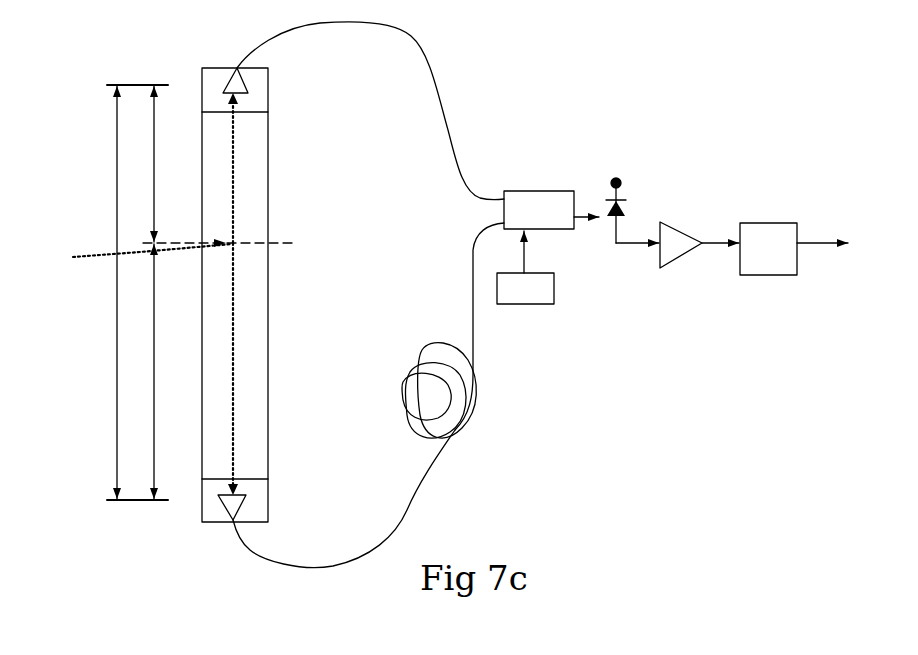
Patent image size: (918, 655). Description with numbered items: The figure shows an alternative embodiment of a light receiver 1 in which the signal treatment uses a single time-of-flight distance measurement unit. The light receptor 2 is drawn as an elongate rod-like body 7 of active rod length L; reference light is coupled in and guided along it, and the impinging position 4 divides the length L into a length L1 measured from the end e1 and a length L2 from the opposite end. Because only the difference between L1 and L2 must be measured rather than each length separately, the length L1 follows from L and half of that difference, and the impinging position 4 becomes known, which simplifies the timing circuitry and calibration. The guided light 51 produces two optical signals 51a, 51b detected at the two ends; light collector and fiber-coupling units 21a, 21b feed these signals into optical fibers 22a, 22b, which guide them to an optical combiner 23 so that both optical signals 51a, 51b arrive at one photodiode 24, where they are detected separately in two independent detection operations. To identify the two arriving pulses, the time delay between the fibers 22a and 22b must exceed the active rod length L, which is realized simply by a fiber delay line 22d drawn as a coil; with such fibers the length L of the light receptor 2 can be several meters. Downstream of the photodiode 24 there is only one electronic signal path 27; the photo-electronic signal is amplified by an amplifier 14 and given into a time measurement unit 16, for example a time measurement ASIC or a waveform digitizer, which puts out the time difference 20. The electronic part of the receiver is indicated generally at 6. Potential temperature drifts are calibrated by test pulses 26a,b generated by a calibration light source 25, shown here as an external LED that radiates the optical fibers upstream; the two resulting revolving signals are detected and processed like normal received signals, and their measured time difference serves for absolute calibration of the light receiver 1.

The light receiver 1 is at (704, 453).
The light receptor 2 is at (313, 128).
The impinging position 4 is at (232, 247).
The evaluation unit 6 is at (590, 125).
The optical waveguide body 7 is at (250, 327).
The amplifier 14 is at (670, 245).
The time measurement unit 16 is at (756, 260).
The time difference 20 is at (800, 245).
The light collector and fiber-coupling unit 21a is at (237, 82).
The light collector and fiber-coupling unit 21b is at (240, 508).
The optical fiber 22a is at (411, 36).
The optical fiber 22b is at (405, 510).
The delay line 22d is at (465, 392).
The optical combiner 23 is at (527, 225).
The photodiode 24 is at (632, 198).
The calibration light source 25 is at (514, 302).
The test pulses 26a,b is at (527, 249).
The electronic signal path 27 is at (632, 247).
The light path 51 is at (138, 252).
The optical signal 51a is at (235, 160).
The optical signal 51b is at (267, 408).
The active rod length L is at (117, 128).
The length L1 is at (153, 167).
The length L2 is at (152, 430).
The end e1 is at (207, 52).